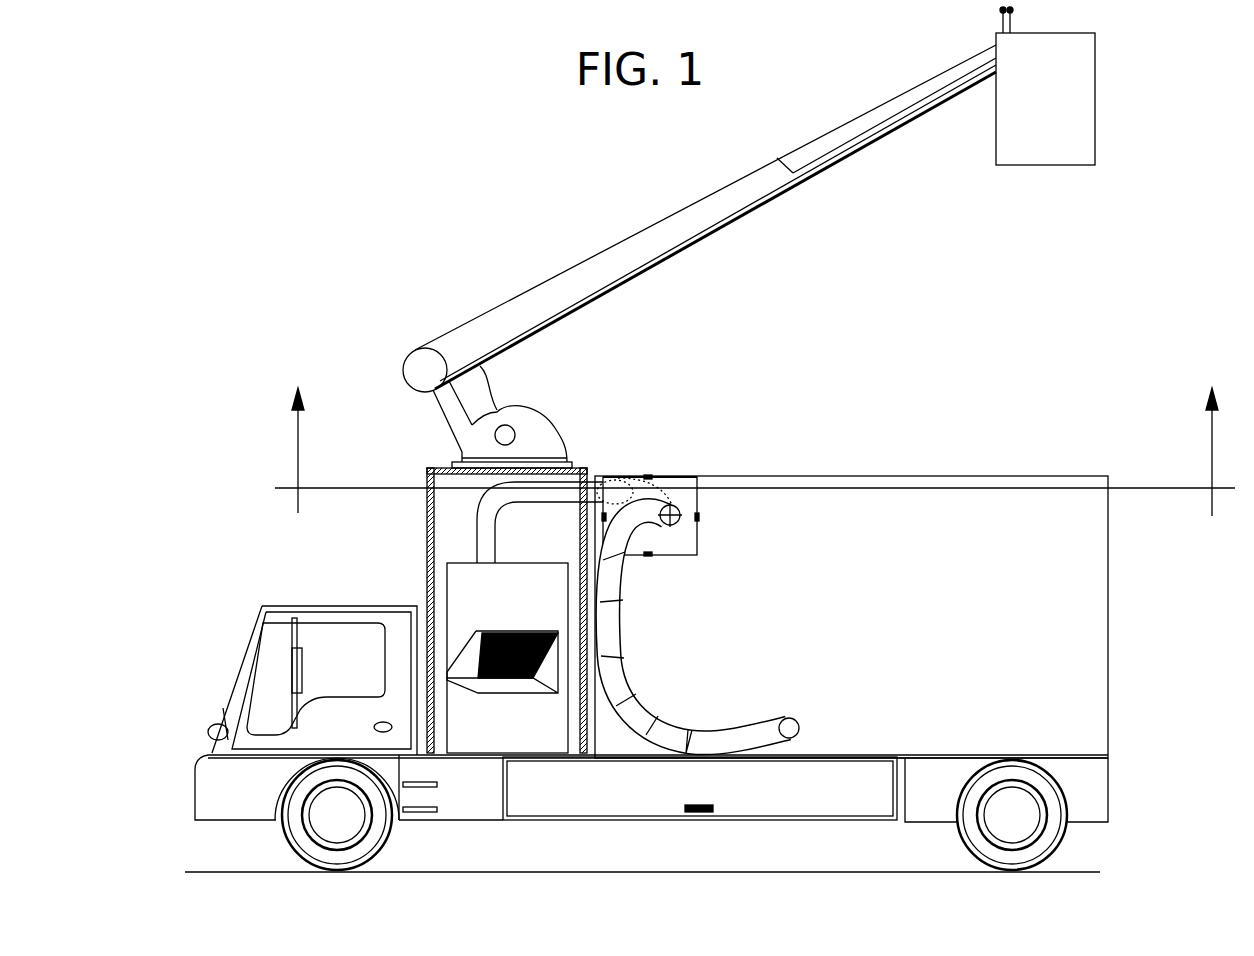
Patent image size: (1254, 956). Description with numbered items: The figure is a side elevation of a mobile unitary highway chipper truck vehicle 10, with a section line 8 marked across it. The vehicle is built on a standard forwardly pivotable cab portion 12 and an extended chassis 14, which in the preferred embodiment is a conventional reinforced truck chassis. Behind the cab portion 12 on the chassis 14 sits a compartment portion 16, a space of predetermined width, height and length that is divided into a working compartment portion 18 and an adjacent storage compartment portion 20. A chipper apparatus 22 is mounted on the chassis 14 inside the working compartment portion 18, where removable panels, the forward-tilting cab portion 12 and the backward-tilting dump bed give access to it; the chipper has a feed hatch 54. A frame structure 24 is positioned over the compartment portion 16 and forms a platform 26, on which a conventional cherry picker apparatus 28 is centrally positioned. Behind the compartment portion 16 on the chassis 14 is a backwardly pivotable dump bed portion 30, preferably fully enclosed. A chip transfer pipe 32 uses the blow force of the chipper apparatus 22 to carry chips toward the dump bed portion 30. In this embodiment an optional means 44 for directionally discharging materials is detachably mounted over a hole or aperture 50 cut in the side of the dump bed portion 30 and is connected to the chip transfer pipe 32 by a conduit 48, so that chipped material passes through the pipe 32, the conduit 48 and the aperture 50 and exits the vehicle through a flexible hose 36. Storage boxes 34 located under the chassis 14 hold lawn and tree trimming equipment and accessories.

The section line 8- 8 is at (754, 452).
The mobile unitary highway chipper truck vehicle 10 is at (326, 292).
The forwardly pivotable cab portion 12 is at (223, 693).
The extended chassis 14 is at (898, 755).
The compartment portion 16 is at (442, 583).
The working compartment portion 18 is at (417, 762).
The storage compartment portion 20 is at (674, 815).
The chipper apparatus 22 is at (510, 675).
The frame structure 24 is at (425, 478).
The platform 26 is at (458, 462).
The cherry picker apparatus 28 is at (537, 285).
The backwardly pivotable dump bed portion 30 is at (985, 476).
The chip transfer pipe 32 is at (575, 478).
The storage box 34 is at (643, 798).
The flexible hose 36 is at (627, 645).
The means for directionally discharging materials 44 is at (688, 490).
The conduit 48 is at (647, 477).
The hole or aperture 50 is at (665, 525).
The feed hatch 54 is at (526, 680).